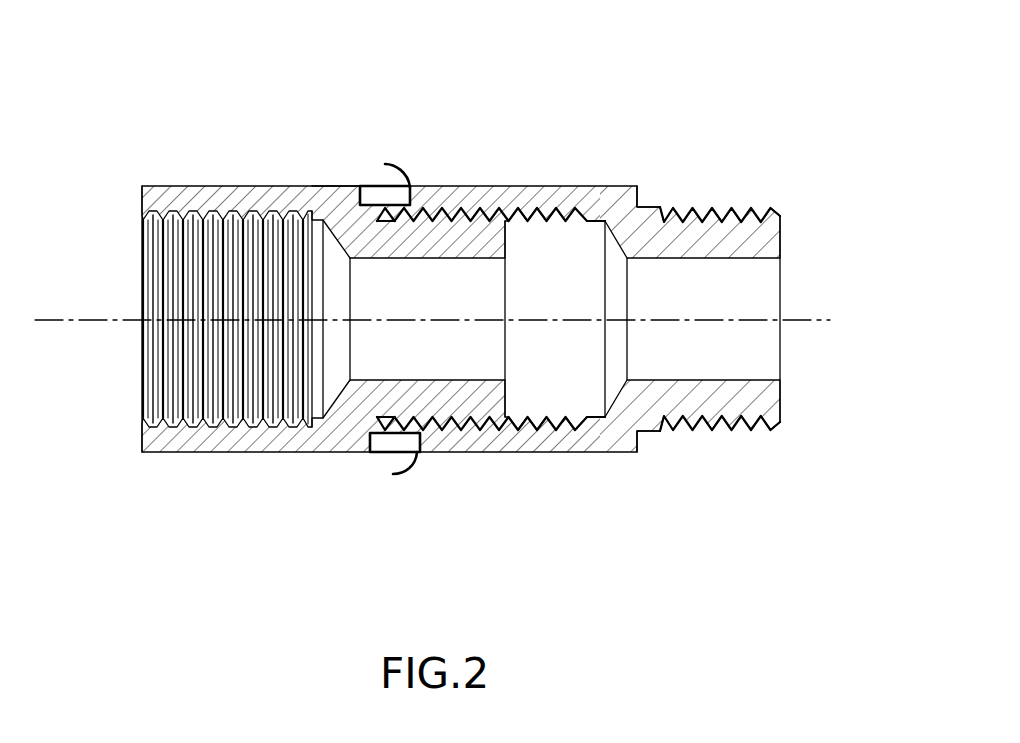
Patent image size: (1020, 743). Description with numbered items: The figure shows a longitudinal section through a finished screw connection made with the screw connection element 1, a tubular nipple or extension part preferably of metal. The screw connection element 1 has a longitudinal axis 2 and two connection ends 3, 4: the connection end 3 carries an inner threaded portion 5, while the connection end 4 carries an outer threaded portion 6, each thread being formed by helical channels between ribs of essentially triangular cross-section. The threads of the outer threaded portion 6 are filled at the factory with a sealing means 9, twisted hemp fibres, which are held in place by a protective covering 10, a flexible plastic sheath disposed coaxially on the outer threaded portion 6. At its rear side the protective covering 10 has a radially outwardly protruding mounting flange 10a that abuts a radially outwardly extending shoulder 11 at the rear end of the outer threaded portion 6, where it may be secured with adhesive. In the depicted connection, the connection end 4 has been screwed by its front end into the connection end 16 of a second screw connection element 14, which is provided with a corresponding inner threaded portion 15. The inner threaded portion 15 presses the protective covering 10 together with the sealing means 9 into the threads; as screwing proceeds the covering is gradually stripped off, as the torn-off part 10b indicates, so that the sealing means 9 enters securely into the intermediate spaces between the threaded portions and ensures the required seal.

The screw connection element 1 is at (262, 187).
The longitudinal axis 2 is at (98, 321).
The connection end 3 is at (210, 187).
The connection end 4 is at (478, 187).
The inner threaded portion 5 is at (173, 290).
The outer threaded portion 6 is at (357, 418).
The sealing means 9 is at (392, 433).
The protective covering 10 is at (393, 187).
The mounting flange 10a is at (360, 187).
The torn-off part 10b is at (412, 474).
The shoulder 11 is at (357, 188).
The second screw connection element 14 is at (705, 176).
The inner threaded portion 15 is at (567, 425).
The connection end 16 is at (610, 187).